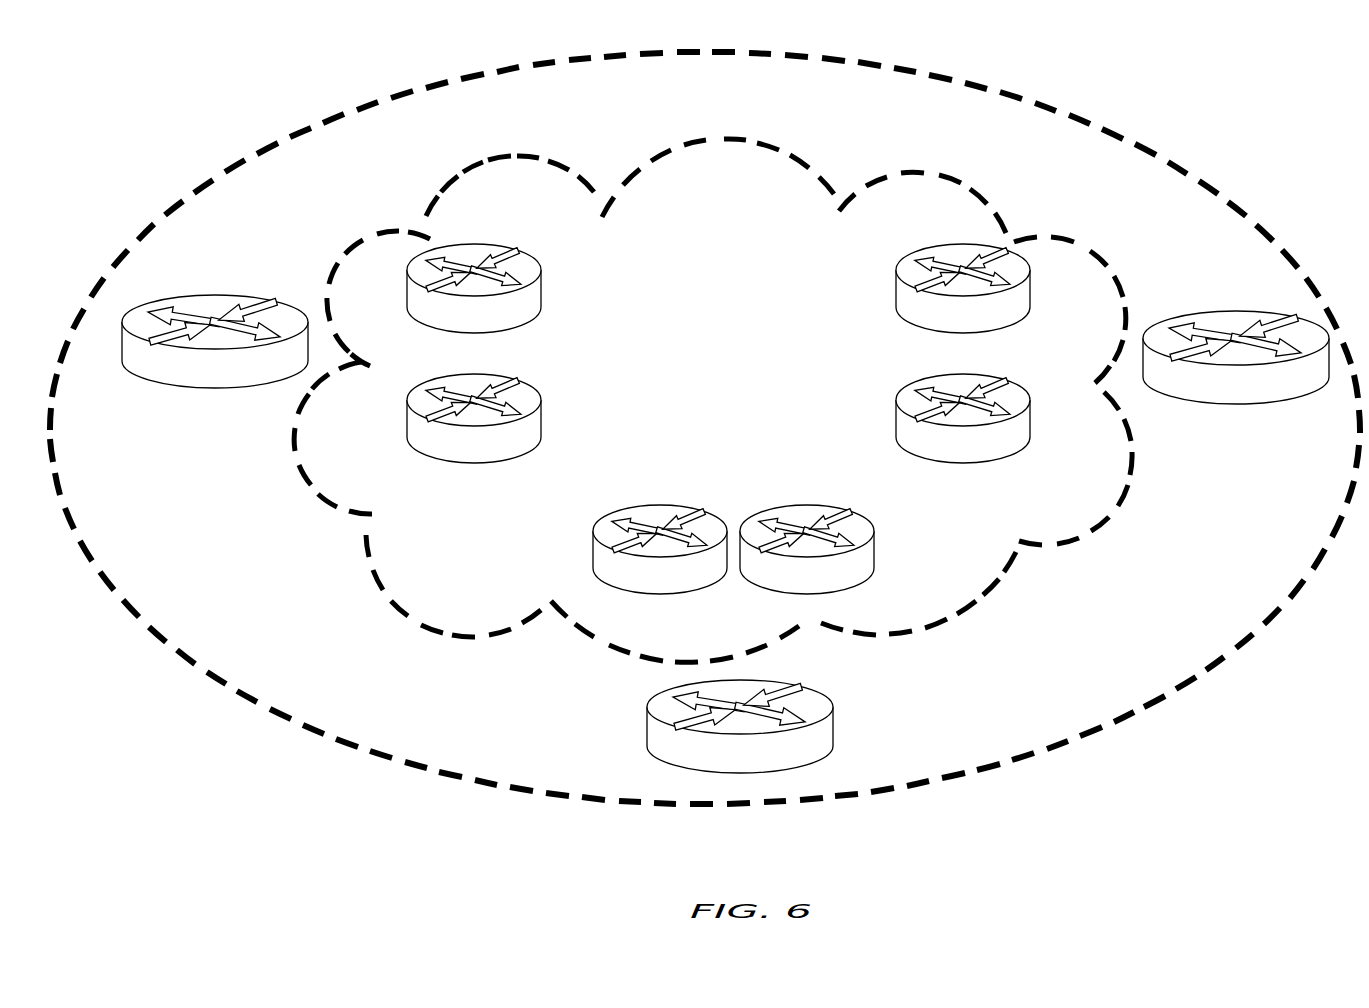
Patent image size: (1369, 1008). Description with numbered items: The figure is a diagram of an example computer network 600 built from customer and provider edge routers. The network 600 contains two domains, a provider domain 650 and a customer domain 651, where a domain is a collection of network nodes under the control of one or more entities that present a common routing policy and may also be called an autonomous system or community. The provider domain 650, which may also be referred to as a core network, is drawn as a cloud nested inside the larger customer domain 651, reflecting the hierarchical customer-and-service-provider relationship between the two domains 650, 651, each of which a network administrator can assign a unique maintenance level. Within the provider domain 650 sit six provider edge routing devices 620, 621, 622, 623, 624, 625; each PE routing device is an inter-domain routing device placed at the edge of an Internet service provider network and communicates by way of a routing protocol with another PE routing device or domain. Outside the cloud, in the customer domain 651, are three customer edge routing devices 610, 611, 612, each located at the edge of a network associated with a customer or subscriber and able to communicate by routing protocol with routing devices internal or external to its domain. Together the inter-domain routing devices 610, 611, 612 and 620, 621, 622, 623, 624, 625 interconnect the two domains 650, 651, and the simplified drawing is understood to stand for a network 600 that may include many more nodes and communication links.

The computer network 600 is at (1196, 95).
The customer edge routing device 610 is at (247, 381).
The customer edge routing device 611 is at (772, 766).
The customer edge routing device 612 is at (1268, 397).
The provider edge routing device 620 is at (506, 326).
The provider edge routing device 621 is at (506, 456).
The provider edge routing device 622 is at (692, 587).
The provider edge routing device 623 is at (839, 587).
The provider edge routing device 624 is at (995, 456).
The provider edge routing device 625 is at (995, 326).
The provider domain 650 is at (838, 254).
The customer domain 651 is at (852, 101).